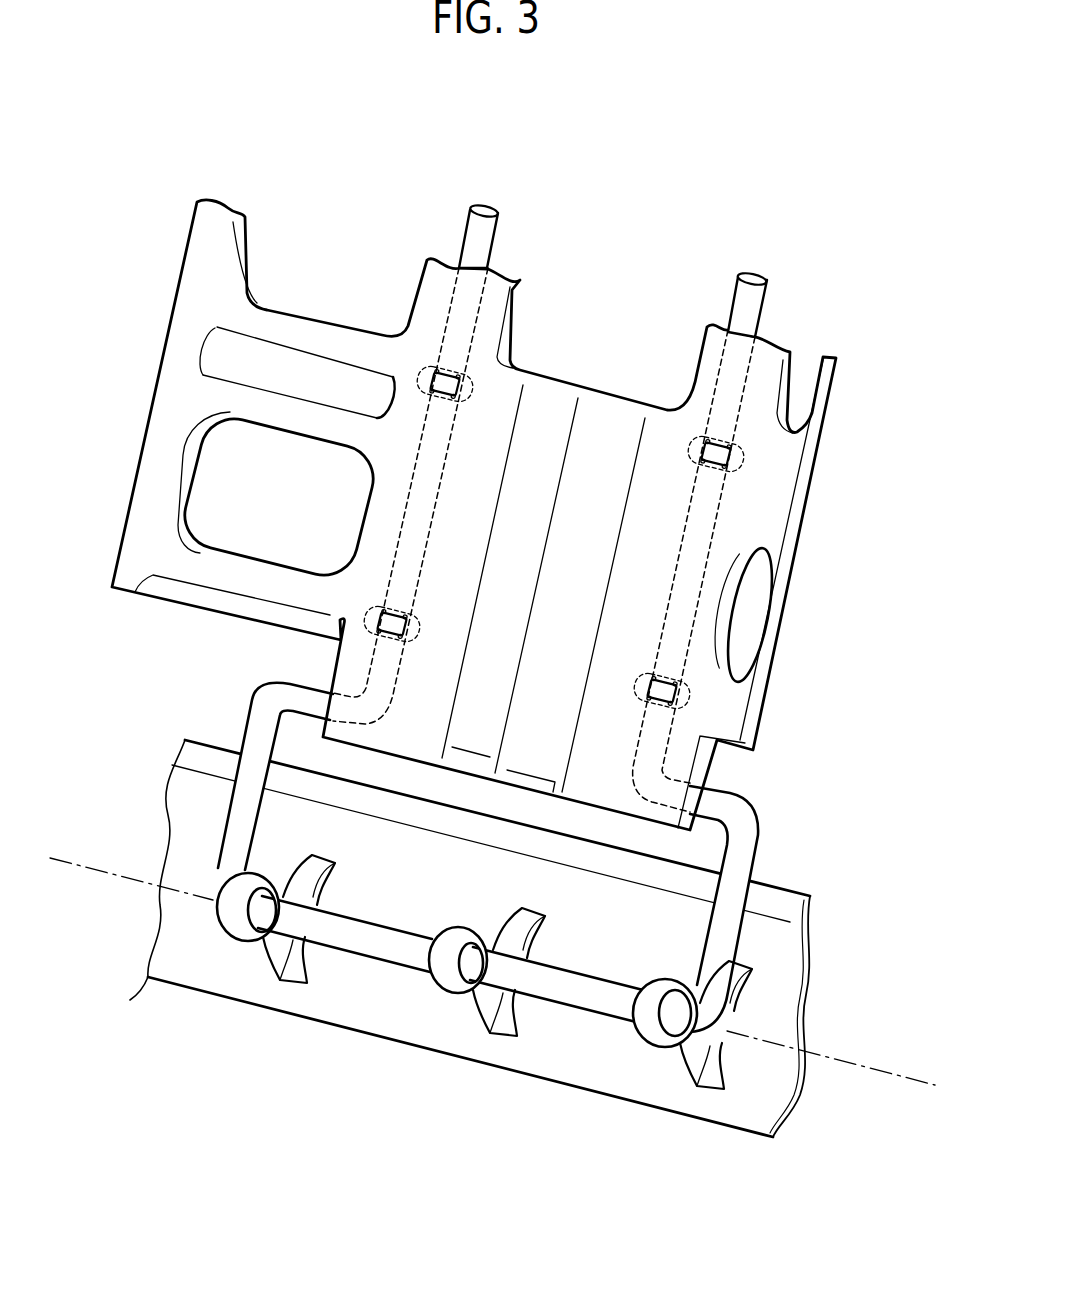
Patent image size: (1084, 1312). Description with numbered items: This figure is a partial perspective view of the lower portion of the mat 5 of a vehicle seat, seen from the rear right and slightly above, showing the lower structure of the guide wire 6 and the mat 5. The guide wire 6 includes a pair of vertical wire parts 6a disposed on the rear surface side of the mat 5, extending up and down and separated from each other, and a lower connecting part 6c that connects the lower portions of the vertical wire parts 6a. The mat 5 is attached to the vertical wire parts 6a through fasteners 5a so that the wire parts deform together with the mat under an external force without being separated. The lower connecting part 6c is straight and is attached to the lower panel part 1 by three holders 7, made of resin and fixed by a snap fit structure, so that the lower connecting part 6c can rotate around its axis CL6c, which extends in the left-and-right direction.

The lower panel part 1 is at (728, 1103).
The mat 5 is at (200, 577).
The fastener 5a is at (447, 377).
The guide wire 6 is at (753, 864).
The vertical wire part 6a is at (394, 531).
The lower connecting part 6c is at (563, 993).
The holder 7 is at (223, 940).
The axis of the lower connecting part CL6c is at (898, 1062).